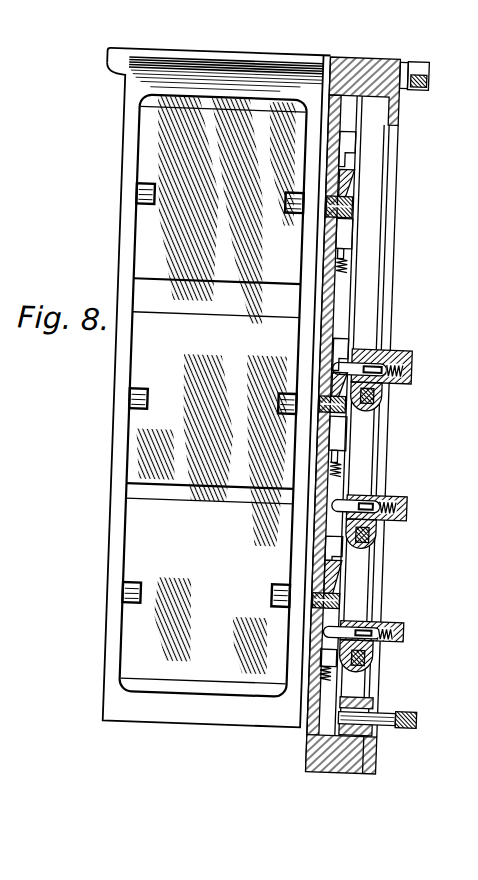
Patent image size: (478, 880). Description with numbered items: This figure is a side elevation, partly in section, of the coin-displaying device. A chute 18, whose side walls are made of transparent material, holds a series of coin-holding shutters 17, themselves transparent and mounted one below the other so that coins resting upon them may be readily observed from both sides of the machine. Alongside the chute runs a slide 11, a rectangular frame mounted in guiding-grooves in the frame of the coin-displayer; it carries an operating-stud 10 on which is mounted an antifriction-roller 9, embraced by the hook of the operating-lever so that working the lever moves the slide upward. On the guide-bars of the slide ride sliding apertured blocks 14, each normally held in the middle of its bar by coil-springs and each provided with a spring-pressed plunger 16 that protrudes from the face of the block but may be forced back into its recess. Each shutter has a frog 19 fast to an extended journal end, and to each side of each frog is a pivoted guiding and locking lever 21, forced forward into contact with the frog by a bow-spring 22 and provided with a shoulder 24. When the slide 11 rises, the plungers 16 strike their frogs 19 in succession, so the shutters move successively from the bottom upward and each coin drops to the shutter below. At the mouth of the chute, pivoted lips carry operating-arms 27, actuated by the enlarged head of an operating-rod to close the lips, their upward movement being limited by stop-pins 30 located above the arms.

The antifriction-roller 9 is at (430, 725).
The operating-stud 10 is at (402, 728).
The slide 11 is at (396, 693).
The sliding apertured block 14 is at (392, 392).
The spring-pressed plunger 16 is at (362, 367).
The coin-holding shutter 17 is at (213, 395).
The chute 18 is at (130, 449).
The frog 19 is at (353, 191).
The guiding and locking lever 21 is at (350, 157).
The bow-spring 22 is at (350, 251).
The shoulder 24 is at (348, 174).
The operating-arm 27 is at (428, 70).
The stop-pin 30 is at (400, 62).